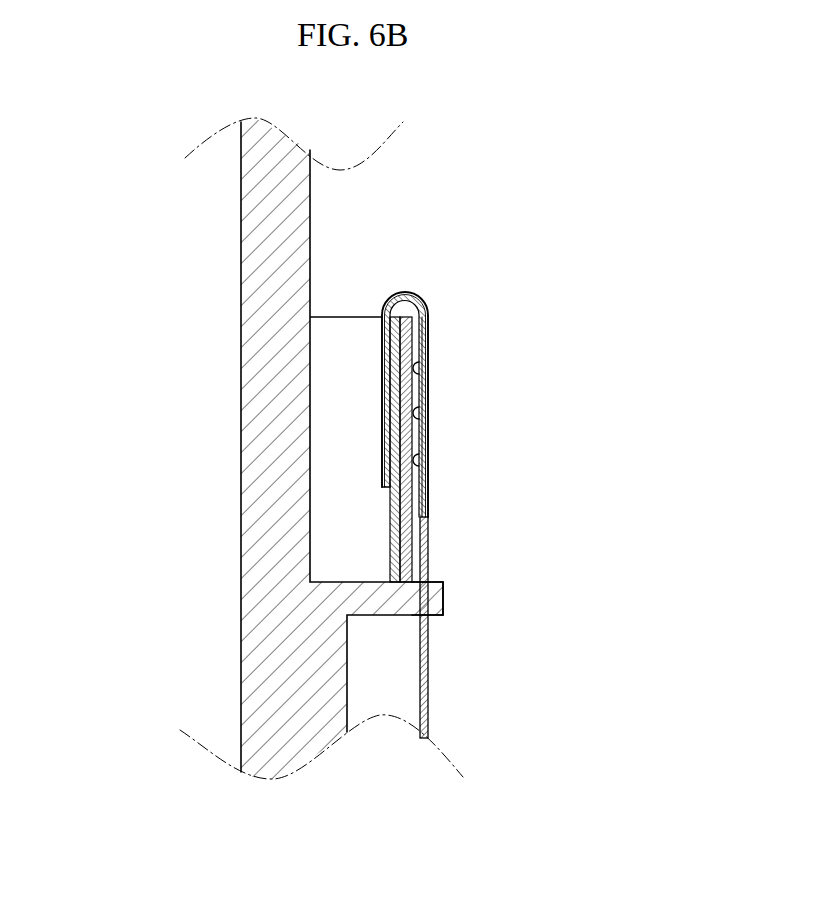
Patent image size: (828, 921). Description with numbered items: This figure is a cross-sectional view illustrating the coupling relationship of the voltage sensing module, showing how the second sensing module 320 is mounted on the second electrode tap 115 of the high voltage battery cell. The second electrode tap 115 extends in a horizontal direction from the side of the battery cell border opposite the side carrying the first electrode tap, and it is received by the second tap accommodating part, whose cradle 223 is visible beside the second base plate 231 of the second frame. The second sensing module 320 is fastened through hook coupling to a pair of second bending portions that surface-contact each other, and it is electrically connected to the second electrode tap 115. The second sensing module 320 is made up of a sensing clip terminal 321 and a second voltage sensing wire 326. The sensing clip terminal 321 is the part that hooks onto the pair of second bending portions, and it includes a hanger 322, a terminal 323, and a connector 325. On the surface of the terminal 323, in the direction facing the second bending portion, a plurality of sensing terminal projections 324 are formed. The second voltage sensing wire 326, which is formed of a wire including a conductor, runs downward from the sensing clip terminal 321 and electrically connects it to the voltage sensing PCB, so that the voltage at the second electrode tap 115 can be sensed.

The second electrode tap 115 is at (404, 546).
The cradle 223 is at (401, 604).
The second base plate 231 is at (268, 565).
The second sensing module 320 is at (546, 511).
The sensing clip terminal 321 is at (545, 293).
The hanger 322 is at (404, 332).
The terminal 323 is at (424, 389).
The sensing terminal projections 324 is at (418, 457).
The connector 325 is at (405, 291).
The second voltage sensing wire 326 is at (514, 627).